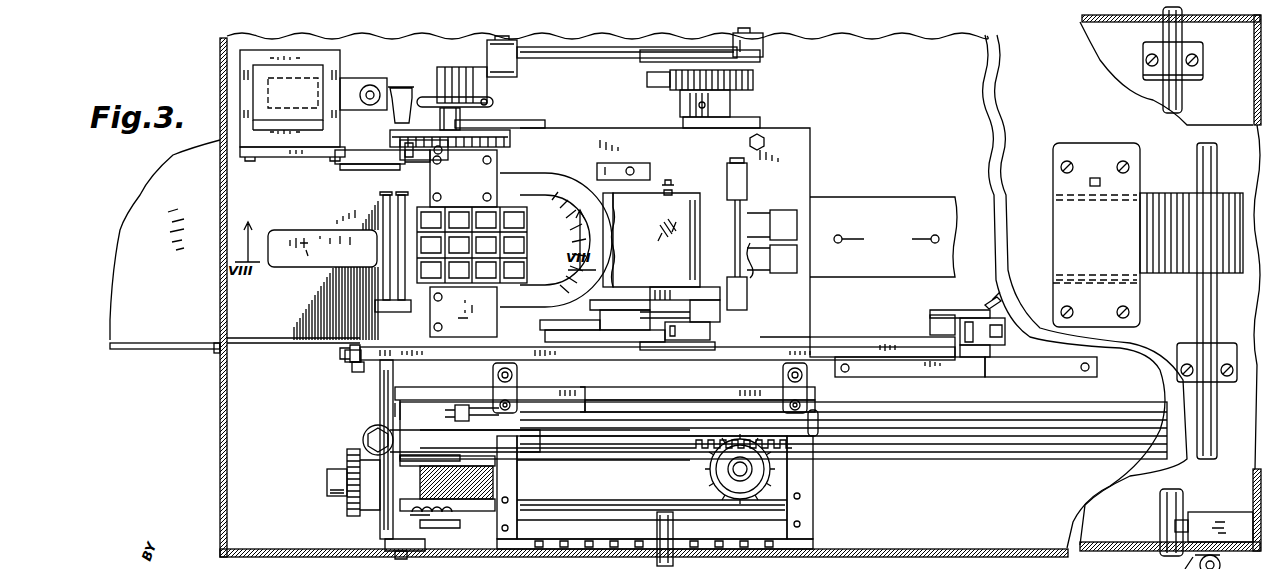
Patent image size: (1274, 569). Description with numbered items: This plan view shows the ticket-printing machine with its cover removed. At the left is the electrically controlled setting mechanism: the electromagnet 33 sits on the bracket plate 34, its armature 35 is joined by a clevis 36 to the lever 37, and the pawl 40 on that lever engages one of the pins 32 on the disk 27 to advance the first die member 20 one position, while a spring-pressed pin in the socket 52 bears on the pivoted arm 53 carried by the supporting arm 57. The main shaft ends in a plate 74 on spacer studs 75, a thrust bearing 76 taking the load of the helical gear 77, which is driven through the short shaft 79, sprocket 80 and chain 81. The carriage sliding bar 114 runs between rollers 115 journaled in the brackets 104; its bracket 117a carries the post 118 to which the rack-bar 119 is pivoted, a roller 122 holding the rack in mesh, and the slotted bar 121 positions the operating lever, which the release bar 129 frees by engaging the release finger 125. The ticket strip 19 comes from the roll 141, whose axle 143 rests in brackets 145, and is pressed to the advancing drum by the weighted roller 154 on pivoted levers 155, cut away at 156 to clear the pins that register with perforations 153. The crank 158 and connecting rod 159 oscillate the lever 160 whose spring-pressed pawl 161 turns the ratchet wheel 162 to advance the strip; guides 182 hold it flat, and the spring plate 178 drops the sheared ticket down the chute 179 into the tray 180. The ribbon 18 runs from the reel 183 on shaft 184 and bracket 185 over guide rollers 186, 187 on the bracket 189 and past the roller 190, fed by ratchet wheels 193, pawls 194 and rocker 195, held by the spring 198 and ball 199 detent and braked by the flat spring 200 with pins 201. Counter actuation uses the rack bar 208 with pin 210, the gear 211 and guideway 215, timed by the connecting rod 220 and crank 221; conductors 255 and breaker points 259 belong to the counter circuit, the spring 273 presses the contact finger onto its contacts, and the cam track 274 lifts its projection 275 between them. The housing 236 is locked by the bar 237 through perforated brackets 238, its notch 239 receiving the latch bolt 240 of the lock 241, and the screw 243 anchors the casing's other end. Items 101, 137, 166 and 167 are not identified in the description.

The inked ribbon 18 is at (382, 215).
The ticket strip 19 is at (868, 200).
The first die member 20 is at (518, 212).
The disk 27 is at (512, 140).
The pins 32 is at (512, 125).
The electromagnet 33 is at (322, 72).
The bracket plate 34 is at (270, 160).
The armature 35 is at (358, 85).
The clevis 36 is at (382, 88).
The lever 37 is at (405, 100).
The pawl 40 is at (470, 118).
The socket 52 is at (348, 170).
The pivoted arm 53 is at (385, 178).
The supporting arm 57 is at (446, 172).
The plate 74 is at (400, 560).
The spacer studs 75 is at (377, 529).
The thrust bearing 76 is at (440, 528).
The helical gear 77 is at (495, 481).
The short shaft 79 is at (327, 472).
The sprocket 80 is at (345, 500).
The chain 81 is at (378, 519).
The hex nut arm 101 is at (370, 428).
The brackets 104 is at (520, 400).
The sliding bar 114 is at (714, 388).
The rollers 115 is at (518, 377).
The bracket 117a is at (965, 377).
The post 118 is at (930, 324).
The rack-bar 119 is at (833, 345).
The slotted bar 121 is at (738, 548).
The roller 122 is at (470, 354).
The release finger 125 is at (672, 512).
The release bar 129 is at (578, 520).
The plate 137 is at (569, 332).
The ticket roll 141 is at (1152, 275).
The axle 143 is at (1094, 178).
The brackets 145 is at (1140, 183).
The perforations 153 is at (886, 239).
The weighted roller 154 is at (800, 222).
The pivoted levers 155 is at (770, 228).
The cut-away portion 156 is at (800, 255).
The crank 158 is at (505, 77).
The connecting rod 159 is at (556, 58).
The lever 160 is at (766, 50).
The spring-pressed pawl 161 is at (648, 80).
The ratchet wheel 162 is at (755, 80).
The nut 166 is at (352, 360).
The washer 167 is at (360, 373).
The resilient spring plate 178 is at (302, 269).
The inclined chute 179 is at (262, 346).
The ticket tray 180 is at (135, 349).
The guides 182 is at (748, 184).
The reel 183 is at (688, 186).
The shaft 184 is at (664, 184).
The bracket 185 is at (652, 287).
The guide roller 186 is at (416, 240).
The guide roller 187 is at (378, 206).
The bracket 189 is at (389, 315).
The roller 190 is at (618, 226).
The ratchet wheel 193 is at (712, 320).
The spring-pressed pawl 194 is at (622, 333).
The rocker 195 is at (590, 342).
The spring 198 is at (600, 296).
The ball 199 is at (652, 312).
The flat spring 200 is at (688, 341).
The pins 201 is at (690, 350).
The rack bar 208 is at (740, 440).
The pin 210 is at (808, 421).
The gear 211 is at (708, 471).
The guideway 215 is at (935, 445).
The connecting rod 220 is at (472, 414).
The crank 221 is at (392, 412).
The housing 236 is at (222, 438).
The bar 237 is at (1197, 323).
The perforated brackets 238 is at (1230, 345).
The notch 239 is at (1175, 523).
The latch bolt 240 is at (1190, 520).
The lock 241 is at (1236, 546).
The screw 243 is at (216, 355).
The conductors 255 is at (995, 298).
The breaker points 259 is at (495, 102).
The spring 273 is at (990, 321).
The cam track 274 is at (1072, 378).
The dielectric projection 275 is at (992, 348).